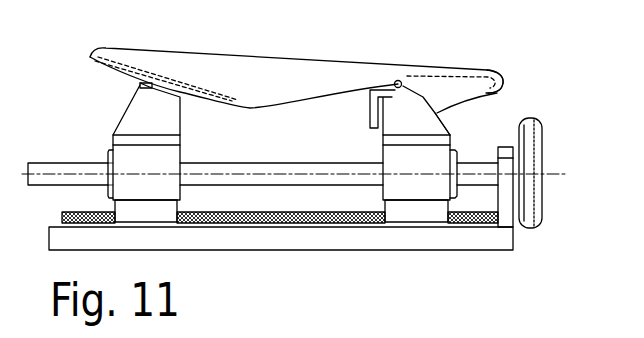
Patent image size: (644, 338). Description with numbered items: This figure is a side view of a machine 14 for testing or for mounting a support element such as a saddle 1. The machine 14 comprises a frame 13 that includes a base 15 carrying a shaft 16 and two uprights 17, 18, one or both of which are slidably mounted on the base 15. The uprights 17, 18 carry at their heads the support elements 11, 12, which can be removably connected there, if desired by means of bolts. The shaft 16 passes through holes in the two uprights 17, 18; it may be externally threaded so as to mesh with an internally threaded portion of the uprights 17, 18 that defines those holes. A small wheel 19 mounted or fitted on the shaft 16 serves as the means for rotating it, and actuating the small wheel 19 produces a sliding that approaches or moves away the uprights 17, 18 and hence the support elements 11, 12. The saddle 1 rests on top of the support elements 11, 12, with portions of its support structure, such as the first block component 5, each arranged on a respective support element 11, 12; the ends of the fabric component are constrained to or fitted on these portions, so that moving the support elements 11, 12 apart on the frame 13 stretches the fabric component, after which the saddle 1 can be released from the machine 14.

The saddle 1 is at (360, 67).
The first block component 5 is at (403, 82).
The support element 11 is at (499, 97).
The support element 12 is at (133, 100).
The main frame 13 is at (495, 250).
The machine 14 is at (428, 266).
The base 15 is at (332, 241).
The shaft 16 is at (250, 186).
The upright 17 is at (432, 165).
The upright 18 is at (122, 163).
The small wheel 19 is at (542, 218).